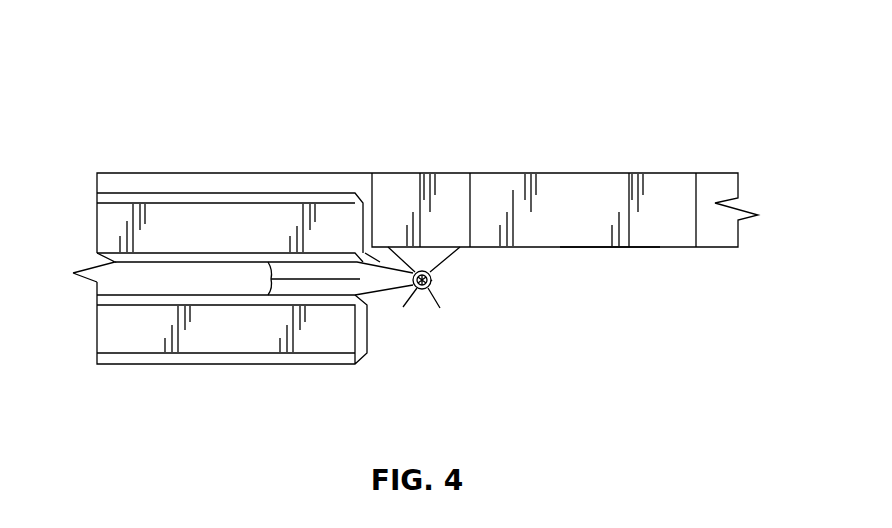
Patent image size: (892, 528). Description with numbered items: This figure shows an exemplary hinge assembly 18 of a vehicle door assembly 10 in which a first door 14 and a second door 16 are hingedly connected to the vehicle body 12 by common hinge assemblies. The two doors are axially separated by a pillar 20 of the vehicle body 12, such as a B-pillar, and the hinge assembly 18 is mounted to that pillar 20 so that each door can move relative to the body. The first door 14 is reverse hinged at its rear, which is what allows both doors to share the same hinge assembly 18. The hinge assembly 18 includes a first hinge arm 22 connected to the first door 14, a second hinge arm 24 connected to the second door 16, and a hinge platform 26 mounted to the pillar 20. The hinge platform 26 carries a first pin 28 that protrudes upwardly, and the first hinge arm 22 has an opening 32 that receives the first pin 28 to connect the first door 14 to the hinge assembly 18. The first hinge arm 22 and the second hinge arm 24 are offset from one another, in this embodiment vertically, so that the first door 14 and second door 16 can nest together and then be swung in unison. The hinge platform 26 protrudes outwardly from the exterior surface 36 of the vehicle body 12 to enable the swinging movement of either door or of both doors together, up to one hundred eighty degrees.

The vehicle door assembly 10 is at (281, 144).
The vehicle body 12 is at (569, 158).
The first door 14 is at (156, 349).
The second door 16 is at (160, 232).
The hinge assembly 18 is at (429, 296).
The pillar 20 is at (438, 186).
The first hinge arm 22 is at (340, 288).
The second hinge arm 24 is at (300, 268).
The hinge platform 26 is at (442, 253).
The first pin 28 is at (433, 284).
The opening 32 is at (418, 289).
The exterior surface 36 is at (608, 248).